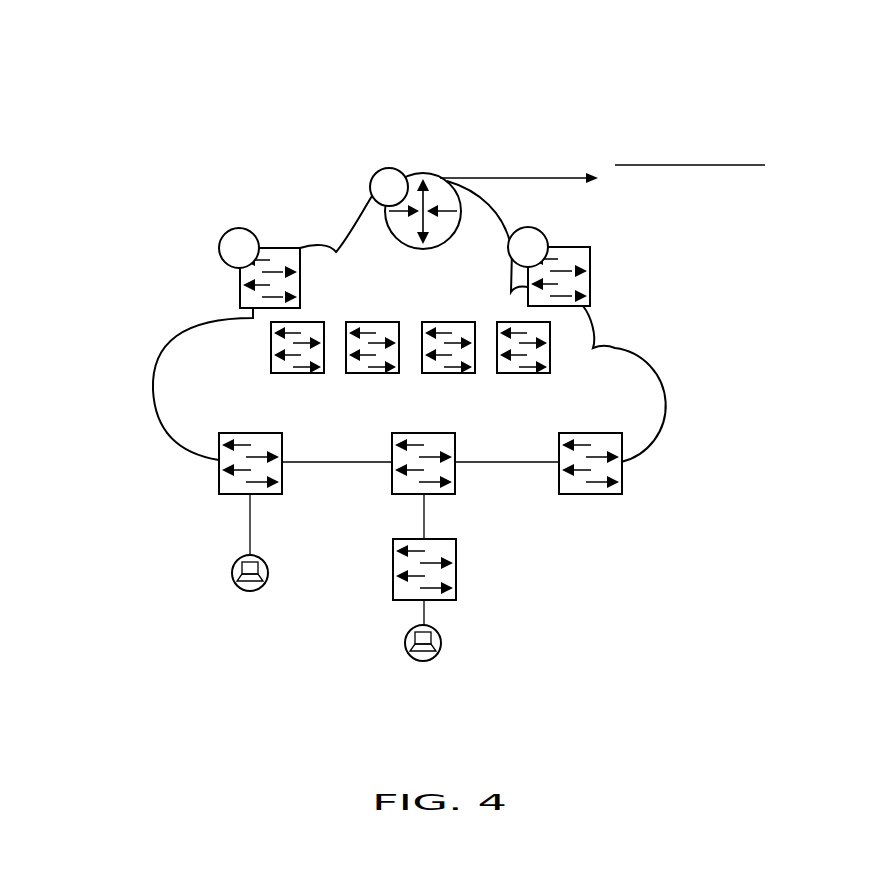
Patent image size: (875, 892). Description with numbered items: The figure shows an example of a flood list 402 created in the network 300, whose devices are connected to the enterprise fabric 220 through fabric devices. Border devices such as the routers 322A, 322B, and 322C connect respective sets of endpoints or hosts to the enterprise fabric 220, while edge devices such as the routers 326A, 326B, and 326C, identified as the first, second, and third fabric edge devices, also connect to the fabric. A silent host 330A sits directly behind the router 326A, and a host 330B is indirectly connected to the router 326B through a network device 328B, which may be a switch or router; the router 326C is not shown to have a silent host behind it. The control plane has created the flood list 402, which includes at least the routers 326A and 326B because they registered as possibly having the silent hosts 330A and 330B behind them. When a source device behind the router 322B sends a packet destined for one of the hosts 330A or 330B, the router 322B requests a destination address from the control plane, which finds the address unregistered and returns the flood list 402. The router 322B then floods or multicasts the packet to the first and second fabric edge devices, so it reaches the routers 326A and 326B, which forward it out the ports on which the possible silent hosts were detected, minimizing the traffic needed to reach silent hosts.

The network 300 is at (756, 82).
The flood list 402 is at (768, 153).
The enterprise fabric 220 is at (650, 358).
The router 322A is at (240, 283).
The router 322B is at (432, 173).
The router 322C is at (592, 262).
The router 326A is at (219, 477).
The router 326B is at (392, 484).
The router 326C is at (621, 482).
The network device 328B is at (456, 578).
The host 330A is at (232, 573).
The host 330B is at (405, 644).